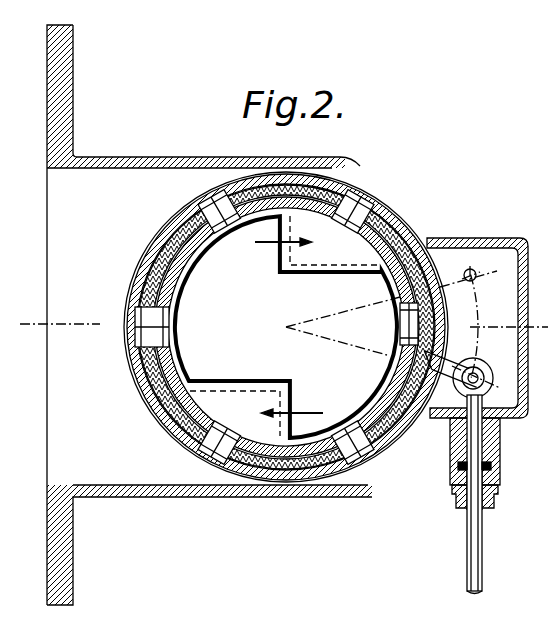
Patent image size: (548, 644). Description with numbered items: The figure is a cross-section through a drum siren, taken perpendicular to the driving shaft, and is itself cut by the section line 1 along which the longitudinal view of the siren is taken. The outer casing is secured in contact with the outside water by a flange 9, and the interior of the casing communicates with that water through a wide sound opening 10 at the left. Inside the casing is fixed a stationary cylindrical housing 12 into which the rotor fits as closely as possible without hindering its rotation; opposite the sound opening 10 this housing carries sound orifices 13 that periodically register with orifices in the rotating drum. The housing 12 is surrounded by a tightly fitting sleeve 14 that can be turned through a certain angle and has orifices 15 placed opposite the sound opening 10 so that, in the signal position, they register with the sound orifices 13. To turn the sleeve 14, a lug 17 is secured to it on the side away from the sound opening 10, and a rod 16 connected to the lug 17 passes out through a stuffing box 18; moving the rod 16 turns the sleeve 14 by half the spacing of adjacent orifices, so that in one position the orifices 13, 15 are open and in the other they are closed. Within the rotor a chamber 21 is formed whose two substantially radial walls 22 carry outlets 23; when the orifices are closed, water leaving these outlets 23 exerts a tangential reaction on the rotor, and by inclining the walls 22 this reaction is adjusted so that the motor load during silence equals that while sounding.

The section line 1— 1 is at (284, 314).
The flange 9 is at (55, 548).
The sound opening 10 is at (50, 342).
The stationary cylindrical housing 12 is at (358, 452).
The sound orifices 13 is at (140, 345).
The sleeve 14 is at (173, 422).
The orifices 15 is at (148, 333).
The rod 16 is at (482, 566).
The lug 17 is at (466, 348).
The stuffing box 18 is at (490, 497).
The chamber 21 is at (347, 270).
The radial walls 22 is at (278, 262).
The outlets 23 is at (284, 330).